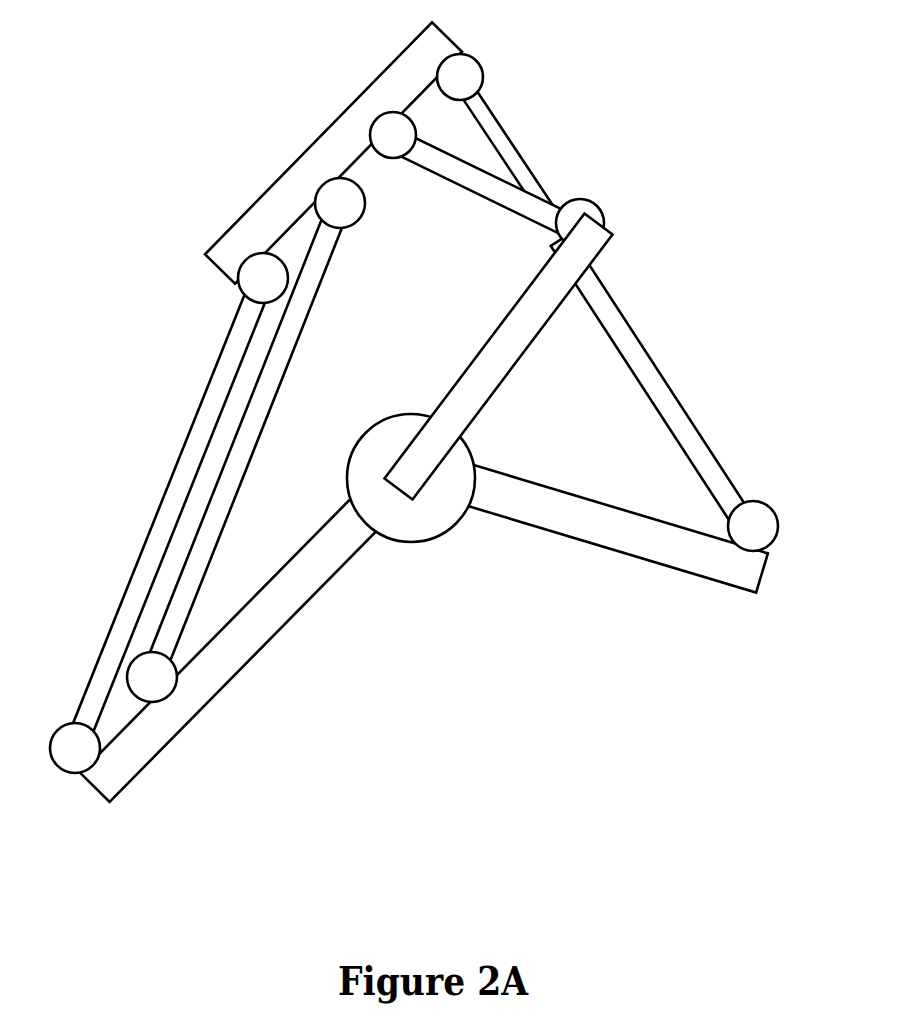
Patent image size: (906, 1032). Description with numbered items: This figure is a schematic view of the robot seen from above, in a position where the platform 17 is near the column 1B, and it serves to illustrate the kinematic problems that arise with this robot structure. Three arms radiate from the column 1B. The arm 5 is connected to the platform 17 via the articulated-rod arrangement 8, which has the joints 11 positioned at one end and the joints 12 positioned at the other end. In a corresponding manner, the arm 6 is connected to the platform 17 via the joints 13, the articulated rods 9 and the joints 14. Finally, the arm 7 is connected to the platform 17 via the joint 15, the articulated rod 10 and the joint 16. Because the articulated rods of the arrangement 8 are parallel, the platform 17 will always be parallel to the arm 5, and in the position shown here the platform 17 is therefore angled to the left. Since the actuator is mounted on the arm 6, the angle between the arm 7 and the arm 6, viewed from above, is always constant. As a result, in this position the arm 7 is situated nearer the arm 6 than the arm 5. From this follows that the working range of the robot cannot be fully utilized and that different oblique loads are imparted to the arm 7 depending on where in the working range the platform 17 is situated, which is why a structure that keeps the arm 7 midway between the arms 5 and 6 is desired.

The column 1B is at (432, 525).
The arm 5 is at (288, 598).
The arm 6 is at (613, 533).
The arm 7 is at (488, 363).
The articulated-rod arrangement 8 is at (215, 520).
The articulated rods 9 is at (653, 383).
The articulated rod 10 is at (470, 180).
The joints 11 is at (158, 688).
The joints 12 is at (332, 200).
The joints 13 is at (757, 513).
The joints 14 is at (470, 73).
The joint 15 is at (583, 205).
The joint 16 is at (383, 132).
The platform 17 is at (313, 158).